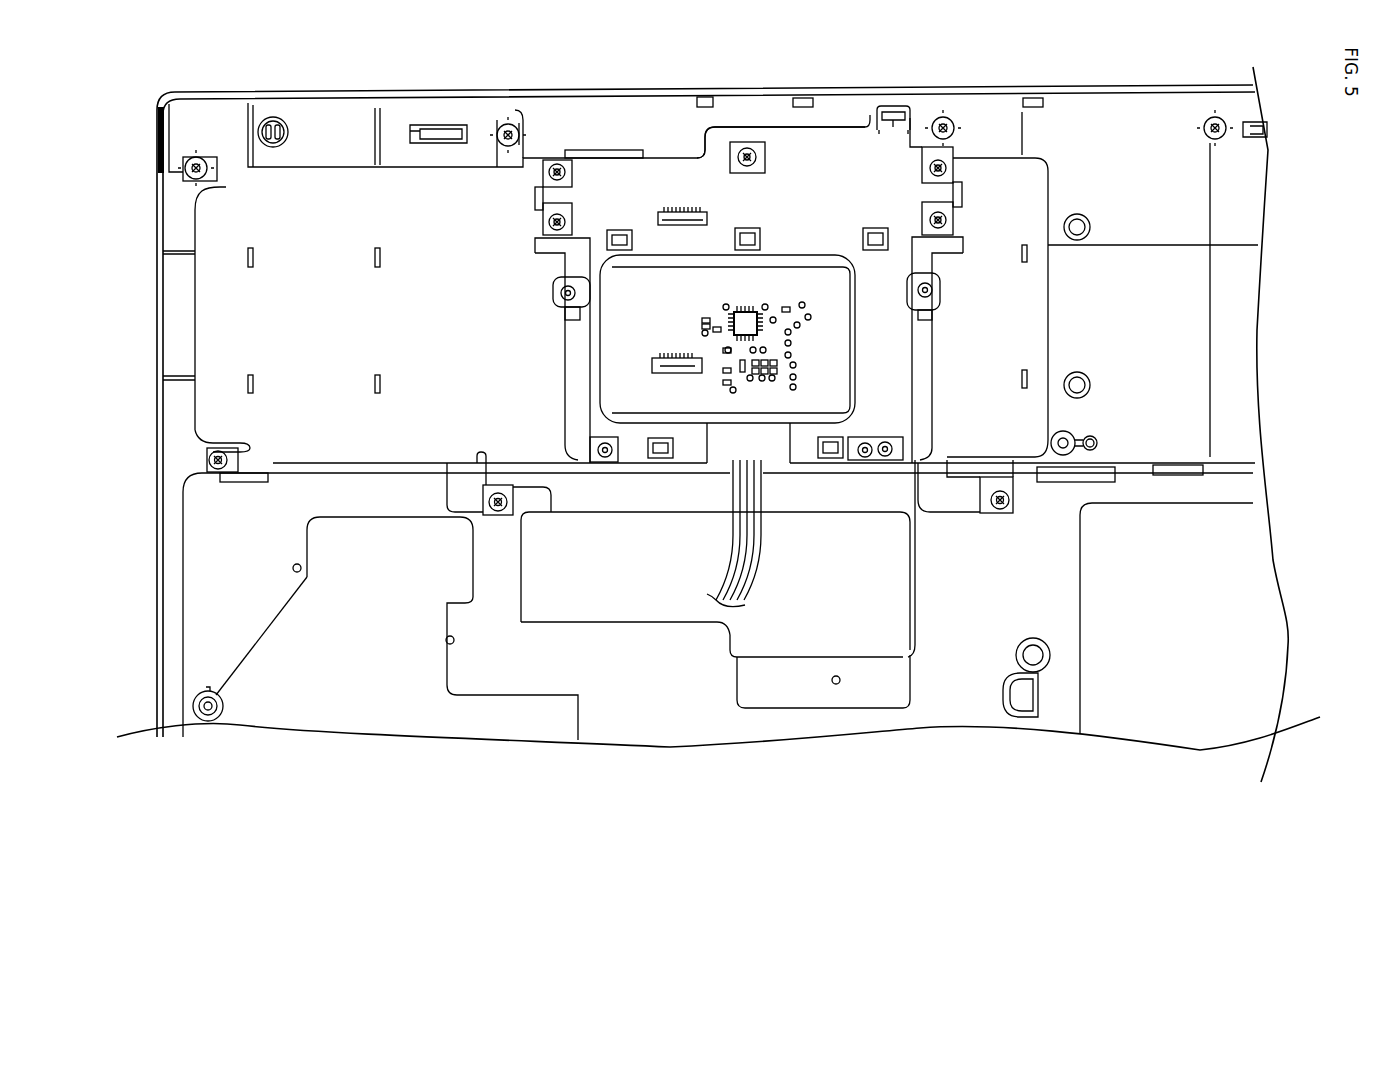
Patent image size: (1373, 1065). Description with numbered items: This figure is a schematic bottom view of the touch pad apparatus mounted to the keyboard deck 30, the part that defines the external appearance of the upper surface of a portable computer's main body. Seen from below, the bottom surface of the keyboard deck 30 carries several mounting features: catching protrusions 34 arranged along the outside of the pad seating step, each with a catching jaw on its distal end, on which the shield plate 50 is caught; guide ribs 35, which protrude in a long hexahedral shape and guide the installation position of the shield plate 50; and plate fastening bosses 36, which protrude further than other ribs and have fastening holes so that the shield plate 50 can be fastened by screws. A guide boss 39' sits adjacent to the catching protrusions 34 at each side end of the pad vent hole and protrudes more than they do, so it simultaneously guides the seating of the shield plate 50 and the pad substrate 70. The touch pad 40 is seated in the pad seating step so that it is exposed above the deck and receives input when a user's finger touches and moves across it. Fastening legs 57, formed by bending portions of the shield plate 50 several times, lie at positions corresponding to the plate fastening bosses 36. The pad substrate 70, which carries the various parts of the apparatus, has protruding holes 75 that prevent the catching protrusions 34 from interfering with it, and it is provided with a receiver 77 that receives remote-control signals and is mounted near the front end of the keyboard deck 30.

The keyboard deck 30 is at (157, 600).
The catching protrusions 34 is at (620, 230).
The guide ribs 35 is at (248, 263).
The plate fastening bosses 36 is at (196, 155).
The guide boss 39' is at (740, 291).
The touch pad 40 is at (697, 397).
The shield plate 50 is at (207, 273).
The fastening legs 57 is at (525, 150).
The pad substrate 70 is at (830, 127).
The protruding holes 75 is at (747, 228).
The receiver 77 is at (893, 106).